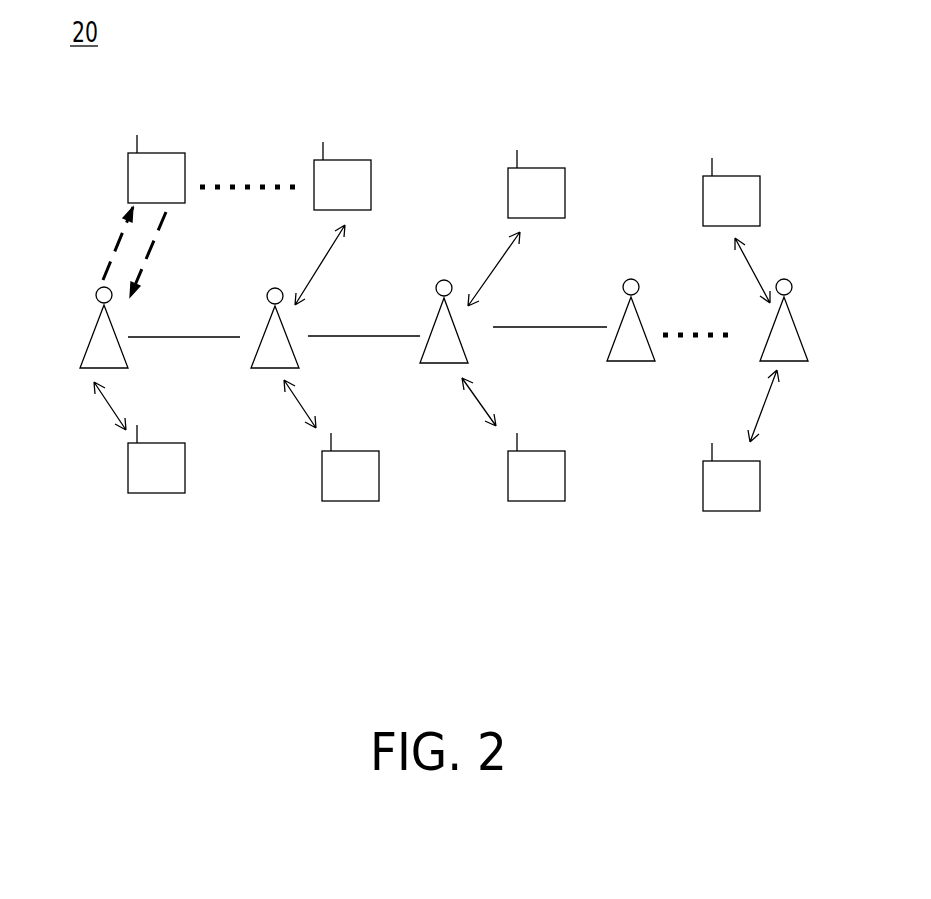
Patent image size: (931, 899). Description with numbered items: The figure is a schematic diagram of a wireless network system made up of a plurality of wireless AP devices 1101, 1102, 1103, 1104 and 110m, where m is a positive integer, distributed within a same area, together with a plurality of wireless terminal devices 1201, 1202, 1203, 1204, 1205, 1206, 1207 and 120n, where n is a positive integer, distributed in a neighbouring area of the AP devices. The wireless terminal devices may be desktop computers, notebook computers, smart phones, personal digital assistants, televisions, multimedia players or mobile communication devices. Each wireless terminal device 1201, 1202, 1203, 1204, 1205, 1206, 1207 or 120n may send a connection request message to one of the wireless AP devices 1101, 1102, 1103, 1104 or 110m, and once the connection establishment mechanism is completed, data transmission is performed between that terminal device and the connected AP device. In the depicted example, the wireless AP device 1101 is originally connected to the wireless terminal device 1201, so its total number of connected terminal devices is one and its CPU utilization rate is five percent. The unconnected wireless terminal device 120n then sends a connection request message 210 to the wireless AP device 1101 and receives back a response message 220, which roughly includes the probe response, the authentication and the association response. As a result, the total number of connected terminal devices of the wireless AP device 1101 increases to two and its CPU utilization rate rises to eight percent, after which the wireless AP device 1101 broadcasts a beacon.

The wireless terminal device 120n is at (165, 153).
The wireless terminal device 1207 is at (350, 160).
The wireless terminal device 1206 is at (543, 168).
The wireless terminal device 1205 is at (738, 176).
The wireless terminal device 1201 is at (152, 493).
The wireless terminal device 1202 is at (346, 501).
The wireless terminal device 1203 is at (533, 501).
The wireless terminal device 1204 is at (728, 511).
The wireless AP device 1101 is at (93, 334).
The wireless AP device 1102 is at (268, 371).
The wireless AP device 1103 is at (430, 365).
The wireless AP device 1104 is at (617, 363).
The wireless AP device 110m is at (800, 330).
The response message 220 is at (122, 230).
The connection request message 210 is at (167, 227).